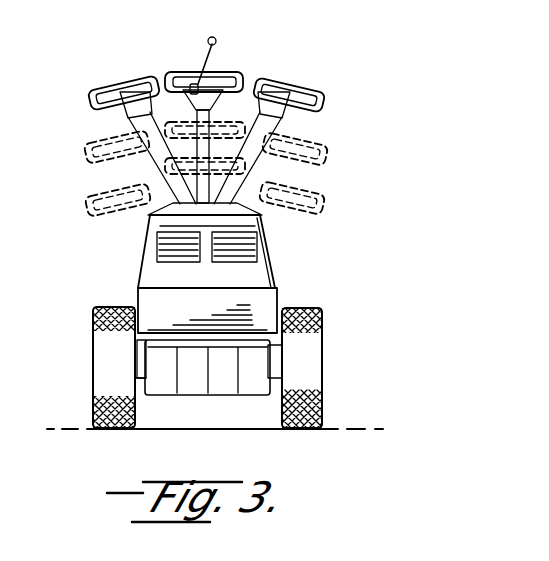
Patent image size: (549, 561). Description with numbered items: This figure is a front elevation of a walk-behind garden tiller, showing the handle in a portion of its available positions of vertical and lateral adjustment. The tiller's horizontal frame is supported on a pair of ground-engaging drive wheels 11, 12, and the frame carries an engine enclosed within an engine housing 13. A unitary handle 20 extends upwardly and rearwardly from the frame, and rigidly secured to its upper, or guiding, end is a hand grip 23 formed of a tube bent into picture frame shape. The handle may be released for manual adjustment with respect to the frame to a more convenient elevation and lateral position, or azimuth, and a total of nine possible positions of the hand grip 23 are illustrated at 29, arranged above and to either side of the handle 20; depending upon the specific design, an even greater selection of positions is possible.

The ground-engaging drive wheel 11 is at (100, 347).
The ground-engaging drive wheel 12 is at (310, 357).
The engine housing 13 is at (262, 263).
The handle 20 is at (215, 151).
The hand grip 23 is at (148, 85).
The possible positions 29 is at (70, 75).